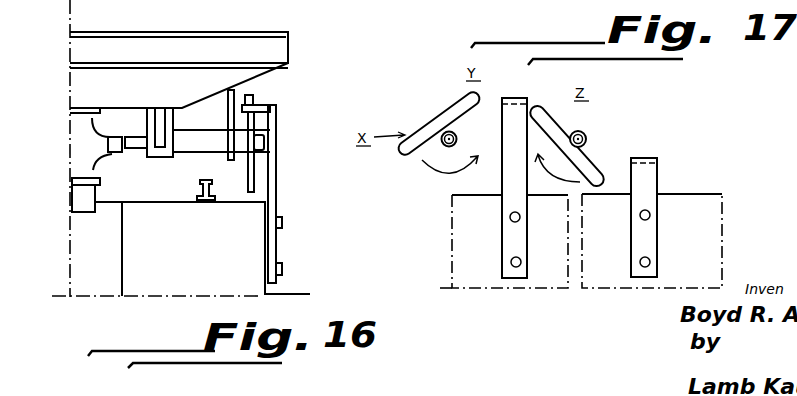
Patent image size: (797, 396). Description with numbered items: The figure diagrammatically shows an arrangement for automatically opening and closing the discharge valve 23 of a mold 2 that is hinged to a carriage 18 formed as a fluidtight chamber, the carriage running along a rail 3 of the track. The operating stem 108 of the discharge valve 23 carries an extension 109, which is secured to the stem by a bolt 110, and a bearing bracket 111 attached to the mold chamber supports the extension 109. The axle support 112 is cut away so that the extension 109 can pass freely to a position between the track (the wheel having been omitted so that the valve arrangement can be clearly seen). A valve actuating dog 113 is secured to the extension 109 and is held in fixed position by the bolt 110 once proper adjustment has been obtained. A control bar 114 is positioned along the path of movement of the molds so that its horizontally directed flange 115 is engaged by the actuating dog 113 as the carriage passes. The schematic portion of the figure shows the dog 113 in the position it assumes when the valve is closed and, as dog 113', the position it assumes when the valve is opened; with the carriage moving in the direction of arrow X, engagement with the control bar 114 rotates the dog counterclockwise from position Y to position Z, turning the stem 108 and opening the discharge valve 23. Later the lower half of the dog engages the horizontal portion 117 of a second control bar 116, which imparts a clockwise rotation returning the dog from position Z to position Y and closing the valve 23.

In FIG. 16, the mold 2 is at (290, 53).
In FIG. 16, the carriage 18 is at (244, 78).
In FIG. 16, the operating stem 108 is at (132, 124).
In FIG. 16, the axle support 112 is at (173, 125).
In FIG. 16, the extension 109 is at (202, 142).
In FIG. 16, the bearing bracket 111 is at (249, 95).
In FIG. 16, the horizontally directed flange 115 is at (273, 103).
In FIG. 17, the horizontally directed flange 115 is at (517, 98).
In FIG. 16, the control bar 114 is at (276, 123).
In FIG. 17, the control bar 114 is at (512, 169).
In FIG. 16, the bolt 110 is at (264, 139).
In FIG. 16, the valve actuating dog 113 is at (281, 152).
In FIG. 17, the valve actuating dog 113 is at (439, 118).
In FIG. 17, the valve actuating dog 113' is at (569, 146).
In FIG. 16, the discharge valve 23 is at (91, 170).
In FIG. 16, the rail 3 is at (197, 187).
In FIG. 17, the control bar 116 is at (650, 187).
In FIG. 17, the horizontal portion 117 is at (650, 158).